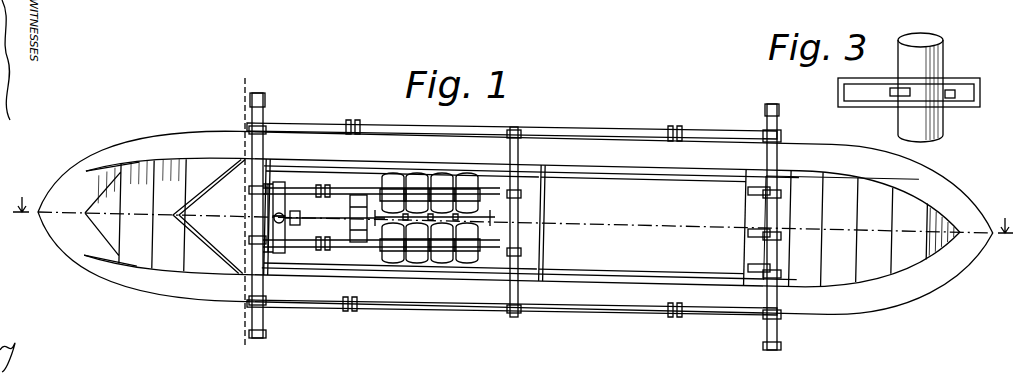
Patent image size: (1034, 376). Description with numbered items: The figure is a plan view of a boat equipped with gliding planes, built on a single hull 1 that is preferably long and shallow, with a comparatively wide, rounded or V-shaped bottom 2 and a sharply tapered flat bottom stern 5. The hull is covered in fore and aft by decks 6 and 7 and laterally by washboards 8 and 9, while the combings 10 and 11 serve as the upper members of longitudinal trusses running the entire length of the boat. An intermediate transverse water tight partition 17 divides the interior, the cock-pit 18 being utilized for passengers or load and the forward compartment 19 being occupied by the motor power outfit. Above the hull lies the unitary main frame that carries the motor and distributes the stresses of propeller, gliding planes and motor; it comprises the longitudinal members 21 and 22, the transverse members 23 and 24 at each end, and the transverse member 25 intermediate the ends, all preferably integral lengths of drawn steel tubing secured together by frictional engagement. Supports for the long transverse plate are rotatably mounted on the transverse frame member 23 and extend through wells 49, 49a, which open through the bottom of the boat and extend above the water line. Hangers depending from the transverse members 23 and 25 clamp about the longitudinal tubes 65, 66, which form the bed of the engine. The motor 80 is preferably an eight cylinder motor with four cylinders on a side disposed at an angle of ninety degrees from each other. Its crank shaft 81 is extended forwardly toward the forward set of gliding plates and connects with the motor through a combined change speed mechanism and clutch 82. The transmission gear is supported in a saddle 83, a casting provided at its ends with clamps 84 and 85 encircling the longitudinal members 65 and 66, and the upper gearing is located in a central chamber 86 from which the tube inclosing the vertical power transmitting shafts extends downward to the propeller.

In FIG. 1, the hull 1 is at (172, 290).
In FIG. 1, the bottom 2 is at (519, 215).
In FIG. 1, the stern 5 is at (249, 215).
In FIG. 1, the fore deck 6 is at (135, 214).
In FIG. 1, the aft deck 7 is at (846, 230).
In FIG. 1, the washboard 8 is at (531, 161).
In FIG. 1, the washboard 9 is at (529, 285).
In FIG. 1, the combing 10 is at (593, 170).
In FIG. 1, the combing 11 is at (624, 280).
In FIG. 1, the intermediate transverse water tight partition 17 is at (542, 240).
In FIG. 1, the cock-pit 18 is at (688, 228).
In FIG. 1, the forward compartment 19 is at (356, 176).
In FIG. 1, the longitudinal frame member 21 is at (610, 133).
In FIG. 1, the longitudinal frame member 22 is at (576, 312).
In FIG. 1, the transverse frame member 23 is at (281, 210).
In FIG. 1, the transverse frame member 24 is at (778, 155).
In FIG. 3, the transverse frame member 24 is at (925, 78).
In FIG. 1, the intermediate transverse member 25 is at (520, 152).
In FIG. 1, the well 49 is at (748, 190).
In FIG. 3, the well 49 is at (876, 104).
In FIG. 1, the central bracket 49a is at (750, 232).
In FIG. 1, the longitudinal tube 65 is at (306, 186).
In FIG. 1, the longitudinal tube 66 is at (304, 248).
In FIG. 1, the motor 80 is at (420, 175).
In FIG. 1, the crank shaft 81 is at (335, 212).
In FIG. 1, the combined change speed mechanism and clutch 82 is at (350, 233).
In FIG. 1, the saddle 83 is at (294, 199).
In FIG. 1, the clamp 84 is at (208, 216).
In FIG. 1, the clamp 85 is at (278, 256).
In FIG. 1, the central chamber 86 is at (293, 233).